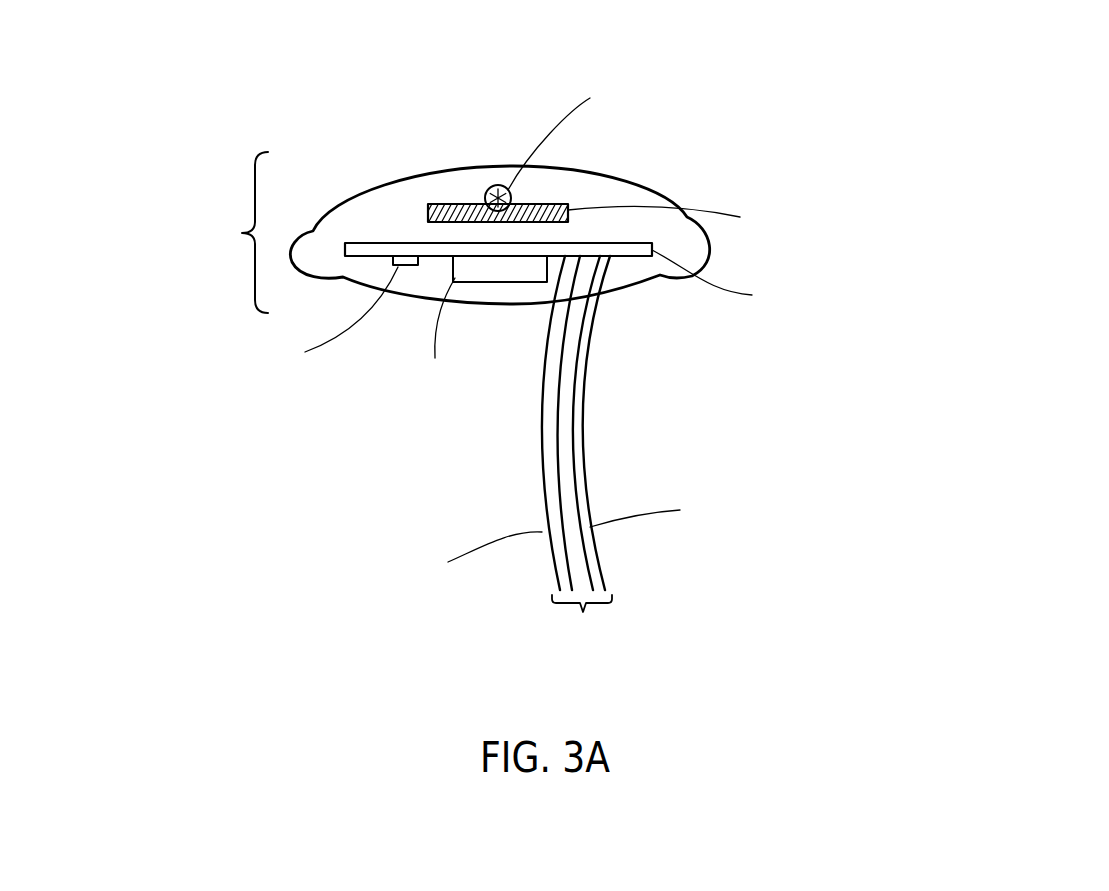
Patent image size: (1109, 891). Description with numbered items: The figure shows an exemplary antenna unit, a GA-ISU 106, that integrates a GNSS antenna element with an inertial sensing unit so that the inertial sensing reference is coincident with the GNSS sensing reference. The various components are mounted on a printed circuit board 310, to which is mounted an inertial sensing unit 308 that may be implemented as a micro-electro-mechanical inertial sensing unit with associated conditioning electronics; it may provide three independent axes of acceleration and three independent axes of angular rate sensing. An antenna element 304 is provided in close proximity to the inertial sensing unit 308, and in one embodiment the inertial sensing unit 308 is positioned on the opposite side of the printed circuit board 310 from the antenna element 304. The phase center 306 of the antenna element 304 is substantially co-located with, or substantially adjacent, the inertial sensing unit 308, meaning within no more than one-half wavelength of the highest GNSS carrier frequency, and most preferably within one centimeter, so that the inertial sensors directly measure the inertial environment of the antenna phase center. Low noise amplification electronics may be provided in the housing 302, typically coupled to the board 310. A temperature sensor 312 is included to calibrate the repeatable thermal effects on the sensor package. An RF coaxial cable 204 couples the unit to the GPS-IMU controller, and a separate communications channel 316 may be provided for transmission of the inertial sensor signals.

The GA-ISU 106 is at (611, 55).
The housing 302 is at (635, 283).
The antenna element 304 is at (558, 204).
The phase center 306 is at (503, 184).
The inertial sensing unit 308 is at (495, 283).
The printed circuit board 310 is at (582, 243).
The temperature sensor 312 is at (392, 263).
The communications channel 316 is at (542, 495).
The RF coaxial cable 204 is at (588, 480).